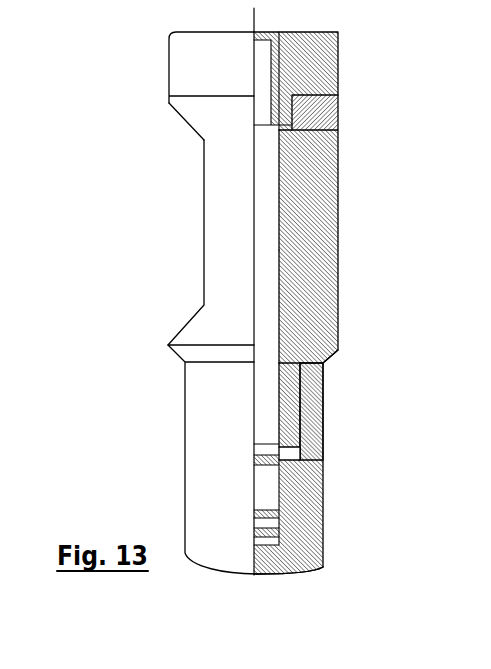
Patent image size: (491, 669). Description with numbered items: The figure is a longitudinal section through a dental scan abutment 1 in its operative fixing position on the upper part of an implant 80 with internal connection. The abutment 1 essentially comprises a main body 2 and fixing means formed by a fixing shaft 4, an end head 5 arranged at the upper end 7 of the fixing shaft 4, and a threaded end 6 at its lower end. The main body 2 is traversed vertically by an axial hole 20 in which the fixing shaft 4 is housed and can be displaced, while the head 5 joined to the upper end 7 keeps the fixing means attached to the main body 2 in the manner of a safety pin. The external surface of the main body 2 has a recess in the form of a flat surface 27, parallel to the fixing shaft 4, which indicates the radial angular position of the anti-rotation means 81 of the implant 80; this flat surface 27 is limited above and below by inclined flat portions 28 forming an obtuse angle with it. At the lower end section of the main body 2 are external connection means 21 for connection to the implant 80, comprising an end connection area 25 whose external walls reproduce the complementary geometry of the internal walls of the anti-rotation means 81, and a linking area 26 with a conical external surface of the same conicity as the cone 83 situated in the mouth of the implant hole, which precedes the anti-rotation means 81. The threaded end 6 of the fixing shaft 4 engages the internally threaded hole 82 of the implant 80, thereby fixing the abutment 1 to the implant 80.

The dental scan abutment 1 is at (108, 63).
The main body 2 is at (300, 224).
The fixing shaft 4 is at (263, 183).
The end head 5 is at (302, 52).
The threaded end 6 is at (267, 498).
The upper end 7 is at (262, 75).
The axial hole 20 is at (277, 290).
The connection means 21 is at (408, 378).
The end connection area 25 is at (287, 425).
The linking area 26 is at (288, 378).
The flat surface 27 is at (194, 182).
The flat portions 28 is at (178, 127).
The implant 80 is at (337, 572).
The anti-rotation means 81 is at (300, 453).
The threaded hole 82 is at (287, 508).
The cone 83 is at (288, 362).